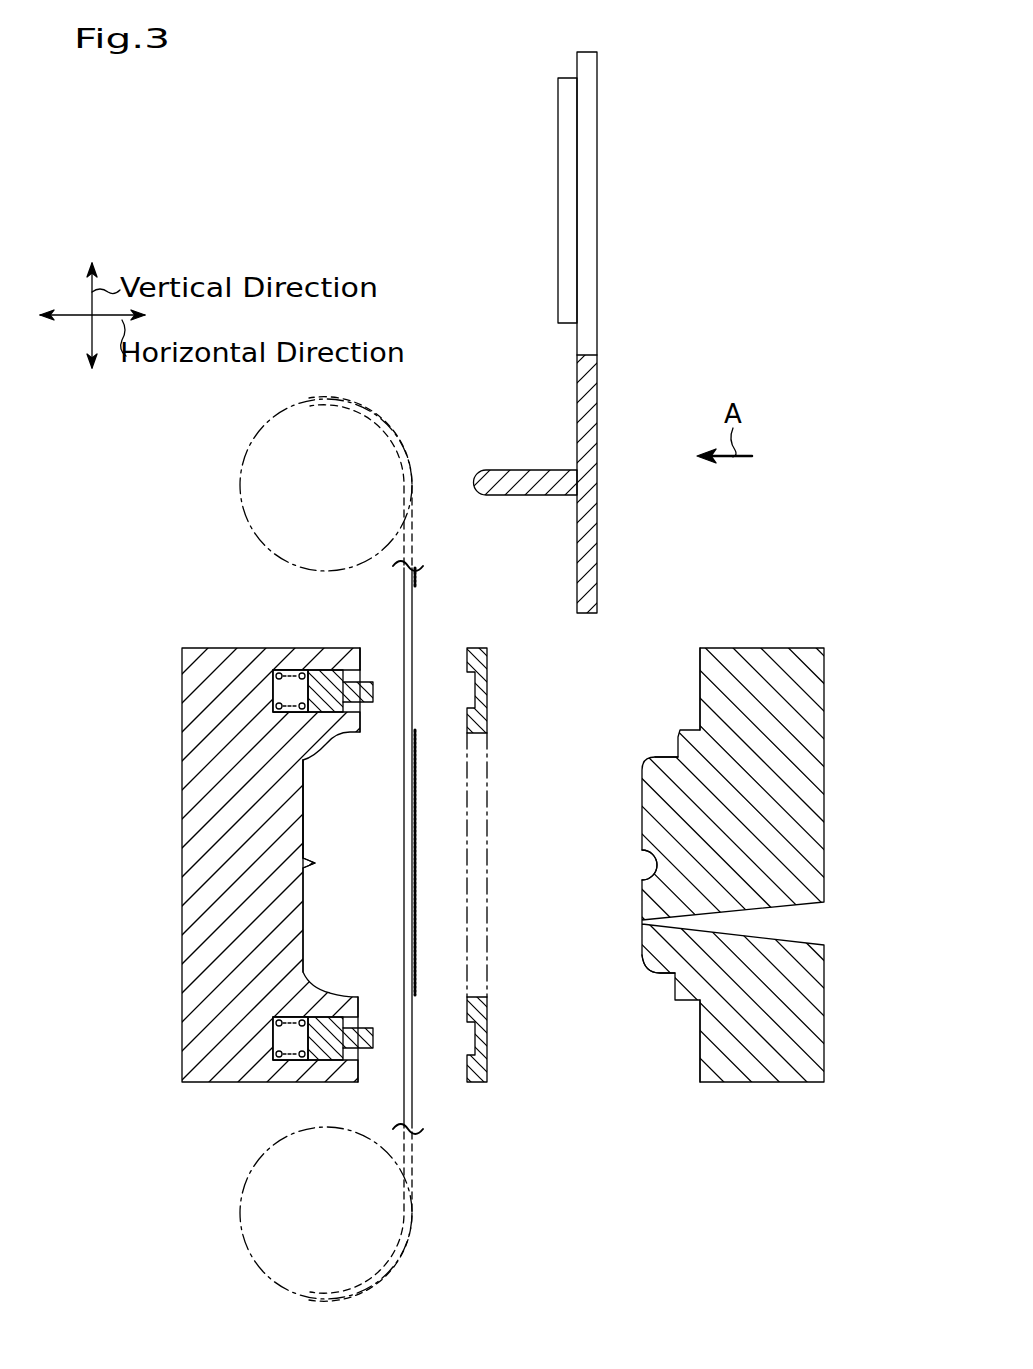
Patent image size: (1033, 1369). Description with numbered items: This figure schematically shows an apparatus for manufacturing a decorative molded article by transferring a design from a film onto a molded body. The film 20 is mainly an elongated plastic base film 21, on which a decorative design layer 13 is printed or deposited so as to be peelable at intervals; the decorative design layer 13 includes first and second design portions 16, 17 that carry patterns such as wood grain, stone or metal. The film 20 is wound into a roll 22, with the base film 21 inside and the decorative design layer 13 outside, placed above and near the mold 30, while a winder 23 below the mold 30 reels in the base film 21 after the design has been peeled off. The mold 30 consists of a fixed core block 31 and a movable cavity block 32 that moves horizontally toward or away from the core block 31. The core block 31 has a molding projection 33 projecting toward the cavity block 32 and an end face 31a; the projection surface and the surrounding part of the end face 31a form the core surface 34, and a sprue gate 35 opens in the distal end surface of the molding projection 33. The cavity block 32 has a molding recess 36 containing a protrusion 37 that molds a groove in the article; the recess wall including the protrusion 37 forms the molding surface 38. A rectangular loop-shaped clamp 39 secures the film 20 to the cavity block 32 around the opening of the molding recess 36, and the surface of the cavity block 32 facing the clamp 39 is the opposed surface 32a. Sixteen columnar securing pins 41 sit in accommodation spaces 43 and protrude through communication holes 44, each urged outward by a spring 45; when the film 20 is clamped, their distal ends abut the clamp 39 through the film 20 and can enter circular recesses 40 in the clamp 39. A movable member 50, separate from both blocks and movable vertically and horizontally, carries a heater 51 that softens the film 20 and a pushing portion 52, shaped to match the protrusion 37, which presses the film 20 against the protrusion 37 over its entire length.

The decorative design layer 13 is at (520, 862).
The first design portion 16 is at (416, 822).
The second design portion 17 is at (416, 945).
The film 20 is at (467, 849).
The base film 21 is at (414, 650).
The roll 22 is at (240, 490).
The winder 23 is at (240, 1217).
The mold 30 is at (412, 856).
The core block 31 is at (746, 648).
The end face 31a is at (700, 675).
The cavity block 32 is at (182, 790).
The opposed surface 32a is at (360, 660).
The molding projection 33 is at (650, 818).
The core surface 34 is at (650, 780).
The sprue gate 35 is at (685, 926).
The molding recess 36 is at (296, 912).
The protrusion 37 is at (306, 862).
The molding surface 38 is at (304, 805).
The clamp 39 is at (488, 866).
The recess 40 is at (476, 690).
The securing pin 41 is at (373, 703).
The accommodation space 43 is at (273, 690).
The communication hole 44 is at (348, 692).
The spring 45 is at (292, 668).
The movable member 50 is at (589, 332).
The heater 51 is at (558, 200).
The pushing portion 52 is at (540, 495).